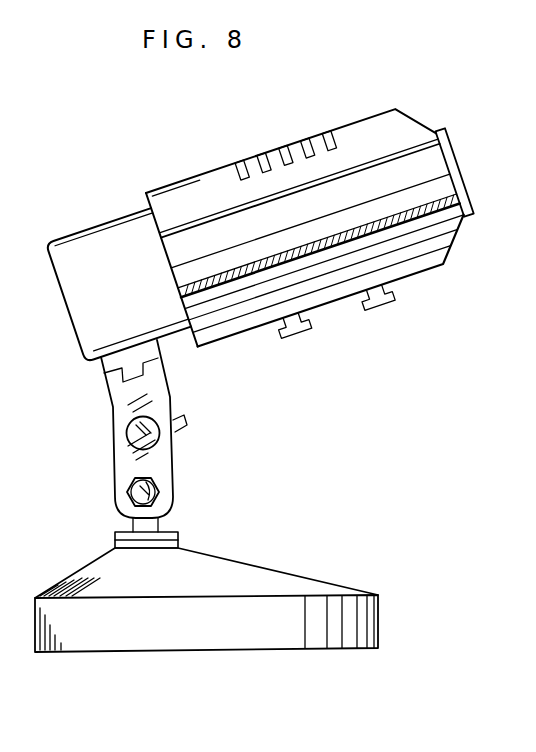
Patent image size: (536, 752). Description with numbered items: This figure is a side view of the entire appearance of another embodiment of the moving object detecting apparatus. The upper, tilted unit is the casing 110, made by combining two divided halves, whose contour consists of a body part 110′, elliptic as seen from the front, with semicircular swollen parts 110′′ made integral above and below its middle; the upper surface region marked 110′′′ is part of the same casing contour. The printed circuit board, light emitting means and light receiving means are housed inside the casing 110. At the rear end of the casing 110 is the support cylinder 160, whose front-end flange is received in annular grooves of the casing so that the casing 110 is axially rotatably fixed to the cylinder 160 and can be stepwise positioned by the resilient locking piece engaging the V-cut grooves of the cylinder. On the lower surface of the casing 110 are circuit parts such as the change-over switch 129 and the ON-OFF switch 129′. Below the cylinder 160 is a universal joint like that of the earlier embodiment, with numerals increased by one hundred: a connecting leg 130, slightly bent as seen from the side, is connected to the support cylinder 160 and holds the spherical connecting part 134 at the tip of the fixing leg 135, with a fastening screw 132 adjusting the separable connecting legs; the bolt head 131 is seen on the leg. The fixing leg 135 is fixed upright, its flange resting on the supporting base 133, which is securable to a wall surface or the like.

The casing 110 is at (433, 137).
The body part 110′ is at (427, 212).
The semicircular swollen parts 110′′ is at (417, 260).
The housing top face with vent slots 110′′′ is at (382, 83).
The support cylinder 160 is at (93, 241).
The change-over switch 129 is at (297, 329).
The ON-OFF switch 129′ is at (406, 326).
The connecting leg 130 is at (163, 402).
The pivot bolt 131 is at (158, 481).
The fastening screw 132 is at (160, 437).
The spherical connecting part 134 is at (160, 494).
The fixing leg 135 is at (163, 522).
The supporting base 133 is at (237, 578).